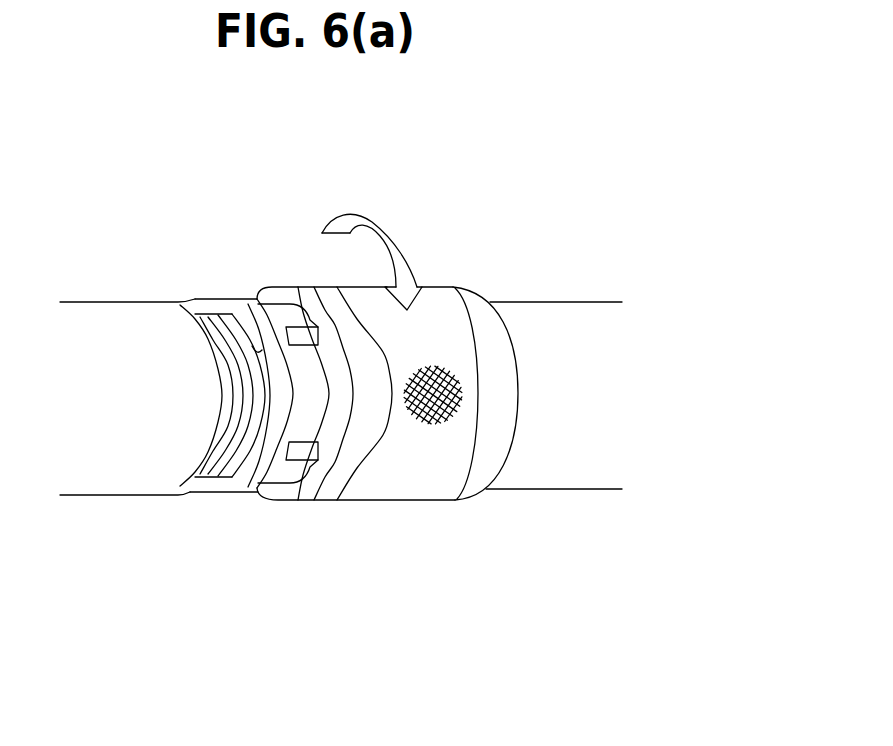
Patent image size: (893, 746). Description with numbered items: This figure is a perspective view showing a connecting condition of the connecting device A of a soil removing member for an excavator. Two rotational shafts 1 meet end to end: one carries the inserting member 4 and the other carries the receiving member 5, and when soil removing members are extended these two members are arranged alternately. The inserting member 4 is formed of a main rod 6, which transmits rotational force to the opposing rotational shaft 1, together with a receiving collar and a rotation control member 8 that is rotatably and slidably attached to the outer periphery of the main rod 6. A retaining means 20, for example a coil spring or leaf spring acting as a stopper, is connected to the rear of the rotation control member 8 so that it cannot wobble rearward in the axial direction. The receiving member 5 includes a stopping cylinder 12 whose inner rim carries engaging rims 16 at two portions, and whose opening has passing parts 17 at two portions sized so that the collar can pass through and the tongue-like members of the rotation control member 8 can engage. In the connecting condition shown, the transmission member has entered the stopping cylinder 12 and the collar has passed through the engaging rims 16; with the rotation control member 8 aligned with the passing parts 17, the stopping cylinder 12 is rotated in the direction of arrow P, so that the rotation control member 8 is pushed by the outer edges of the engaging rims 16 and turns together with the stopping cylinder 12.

The rotational shaft 1 is at (103, 475).
The inserting member 4 is at (178, 283).
The receiving member 5 is at (445, 275).
The main rod 6 is at (228, 467).
The rotation control member 8 is at (307, 322).
The stopping cylinder 12 is at (418, 477).
The engaging rims 16 is at (337, 423).
The passing parts 17 is at (283, 314).
The retaining means 20 is at (212, 313).
The connecting device A is at (310, 208).
The arrow p P is at (331, 255).